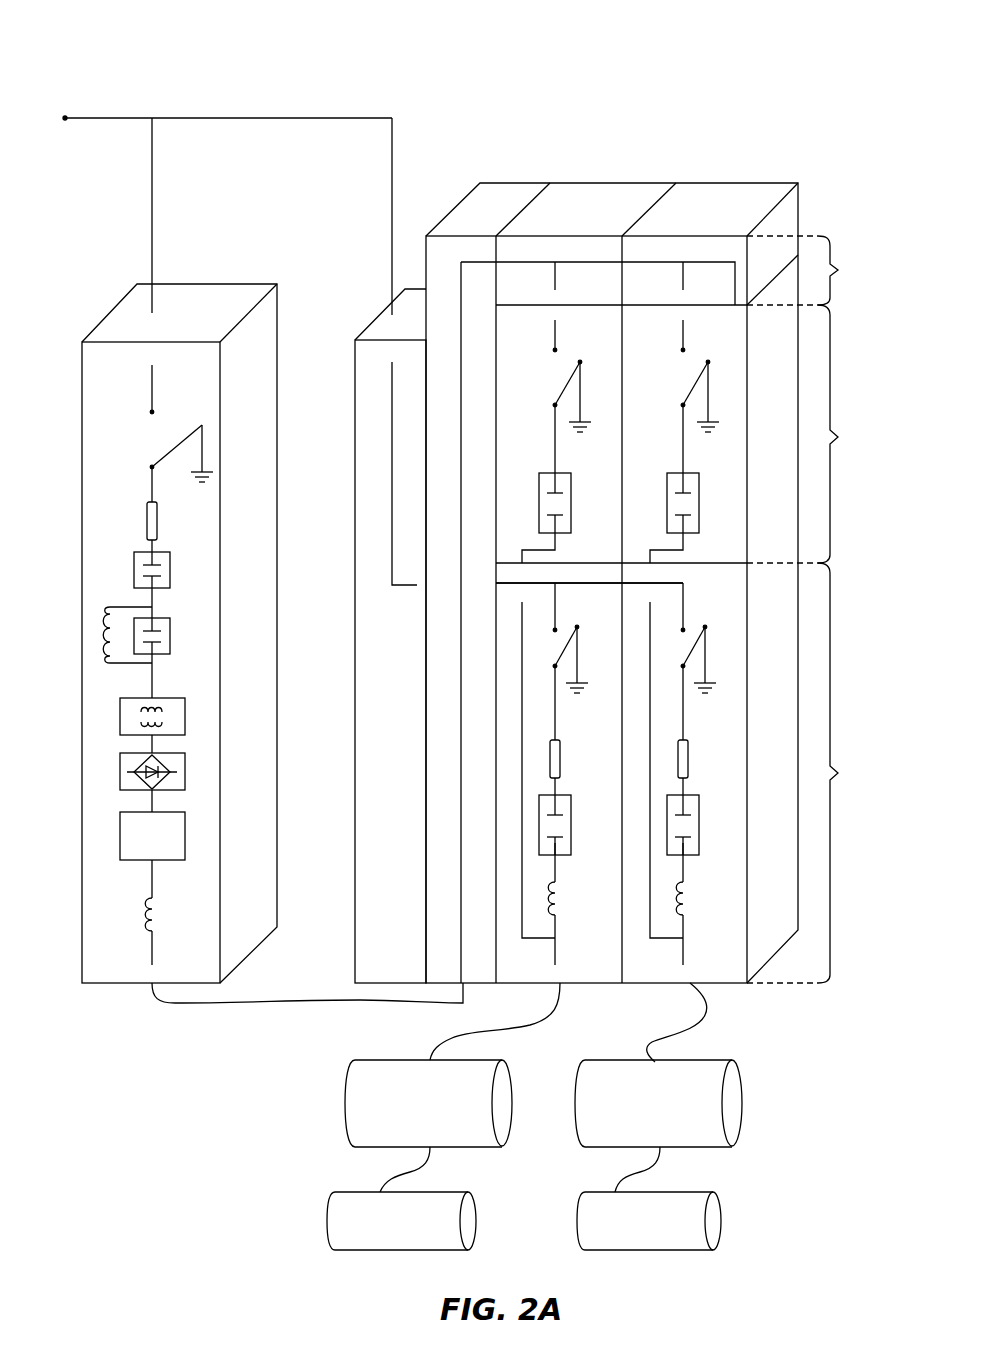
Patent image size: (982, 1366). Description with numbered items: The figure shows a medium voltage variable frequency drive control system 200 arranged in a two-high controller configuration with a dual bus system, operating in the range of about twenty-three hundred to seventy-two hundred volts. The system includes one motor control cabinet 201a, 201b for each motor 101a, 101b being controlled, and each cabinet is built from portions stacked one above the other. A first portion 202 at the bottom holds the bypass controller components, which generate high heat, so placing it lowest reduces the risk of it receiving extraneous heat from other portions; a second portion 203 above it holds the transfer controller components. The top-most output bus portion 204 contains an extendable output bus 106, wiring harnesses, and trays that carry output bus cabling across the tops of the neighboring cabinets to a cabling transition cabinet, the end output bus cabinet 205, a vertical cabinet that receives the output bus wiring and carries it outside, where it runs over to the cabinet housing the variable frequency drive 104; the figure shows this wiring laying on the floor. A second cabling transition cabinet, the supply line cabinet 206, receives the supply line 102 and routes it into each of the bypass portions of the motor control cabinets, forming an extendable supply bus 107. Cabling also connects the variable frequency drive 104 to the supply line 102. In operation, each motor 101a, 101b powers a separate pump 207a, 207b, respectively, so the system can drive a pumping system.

The medium voltage variable frequency drive control system 200 is at (132, 40).
The supply line 102 is at (150, 118).
The variable frequency drive 104 is at (123, 302).
The supply line cabinet 206 is at (386, 327).
The end output bus cabinet 205 is at (504, 195).
The motor control cabinet 201a is at (586, 195).
The motor control cabinet 201b is at (712, 195).
The extendable output bus 106 is at (717, 262).
The output bus portion 204 is at (819, 270).
The second portion 203 is at (854, 434).
The first portion 202 is at (819, 773).
The extendable supply bus 107 is at (678, 583).
The motor 101a is at (428, 1126).
The motor 101b is at (658, 1126).
The pump 207a is at (401, 1221).
The pump 207b is at (649, 1221).